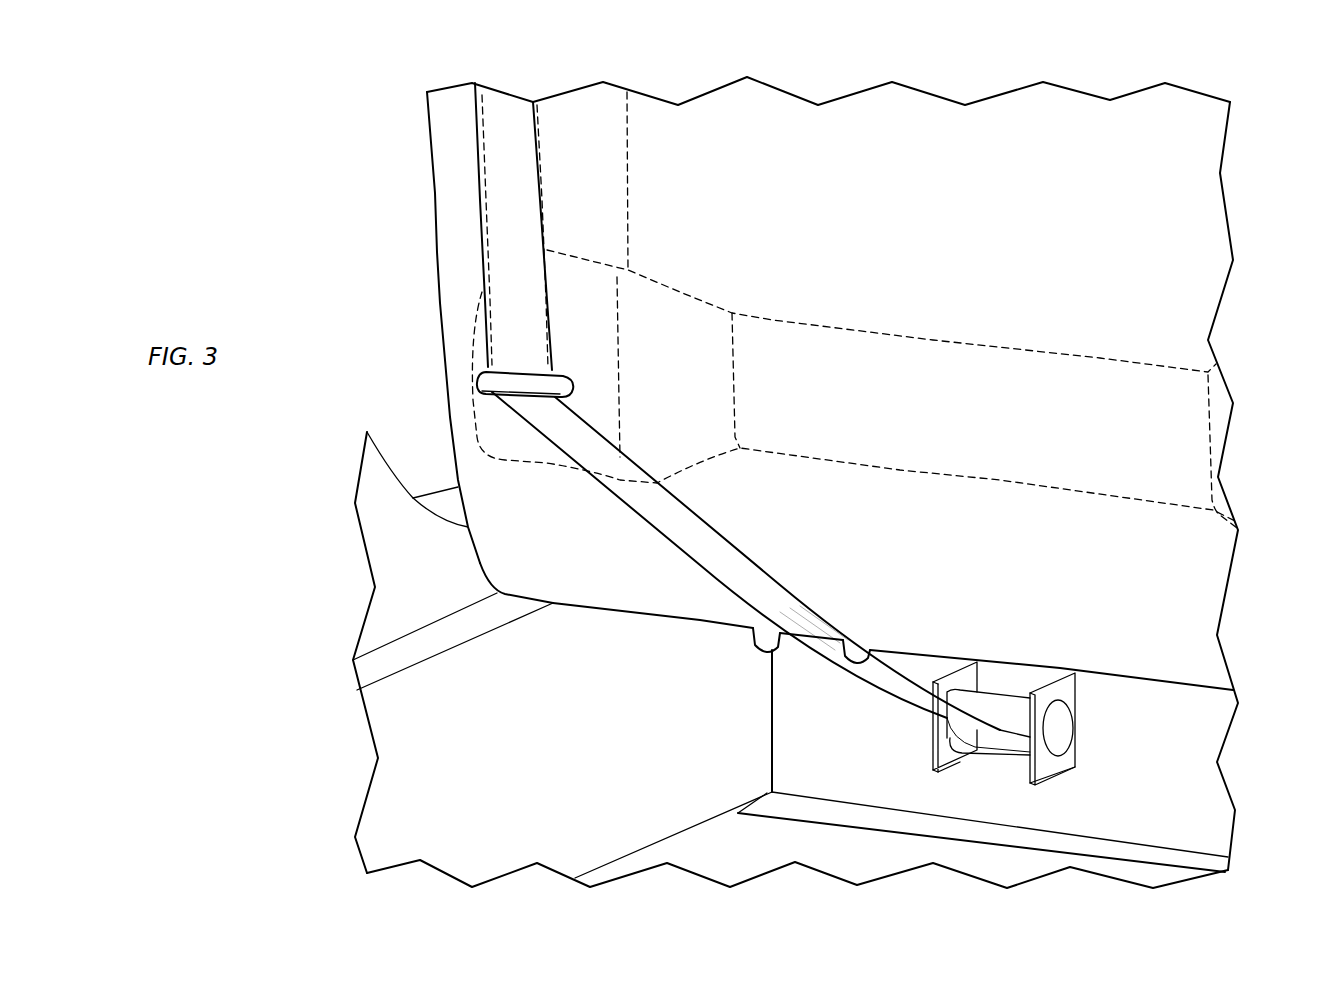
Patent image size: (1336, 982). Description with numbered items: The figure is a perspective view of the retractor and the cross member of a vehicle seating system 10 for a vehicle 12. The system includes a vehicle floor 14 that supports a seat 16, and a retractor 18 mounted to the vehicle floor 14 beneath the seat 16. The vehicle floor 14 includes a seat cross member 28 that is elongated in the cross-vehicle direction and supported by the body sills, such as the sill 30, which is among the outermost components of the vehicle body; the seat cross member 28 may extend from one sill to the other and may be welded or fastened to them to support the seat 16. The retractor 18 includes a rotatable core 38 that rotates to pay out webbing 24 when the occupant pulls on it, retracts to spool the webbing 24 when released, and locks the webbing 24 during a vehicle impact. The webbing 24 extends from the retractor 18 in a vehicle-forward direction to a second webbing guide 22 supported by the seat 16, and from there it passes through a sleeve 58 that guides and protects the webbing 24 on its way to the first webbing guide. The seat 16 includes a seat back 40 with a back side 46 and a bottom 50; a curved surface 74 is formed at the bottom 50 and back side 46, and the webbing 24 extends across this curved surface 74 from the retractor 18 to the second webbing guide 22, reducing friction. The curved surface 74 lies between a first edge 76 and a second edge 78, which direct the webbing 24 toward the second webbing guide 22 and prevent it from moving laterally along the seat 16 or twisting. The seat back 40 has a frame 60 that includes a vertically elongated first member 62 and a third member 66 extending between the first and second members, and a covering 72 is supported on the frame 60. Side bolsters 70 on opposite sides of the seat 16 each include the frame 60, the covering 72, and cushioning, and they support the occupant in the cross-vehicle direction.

The vehicle seating system 10 is at (381, 89).
The vehicle 12 is at (320, 126).
The vehicle floor 14 is at (746, 865).
The seat 16 is at (452, 192).
The retractor 18 is at (1036, 737).
The second webbing guide 22 is at (567, 380).
The webbing 24 is at (550, 213).
The seat cross member 28 is at (1187, 738).
The sill 30 is at (482, 677).
The rotatable core 38 is at (1058, 728).
The seat back 40 is at (450, 252).
The back side 46 is at (949, 178).
The bottom 50 is at (477, 473).
The sleeve 58 is at (543, 164).
The frame 60 is at (773, 318).
The first member 62 is at (628, 150).
The third member 66 is at (1035, 347).
The side bolster 70 is at (438, 298).
The covering 72 is at (1157, 192).
The curved surface 74 is at (830, 637).
The first edge 76 is at (755, 638).
The second edge 78 is at (868, 652).